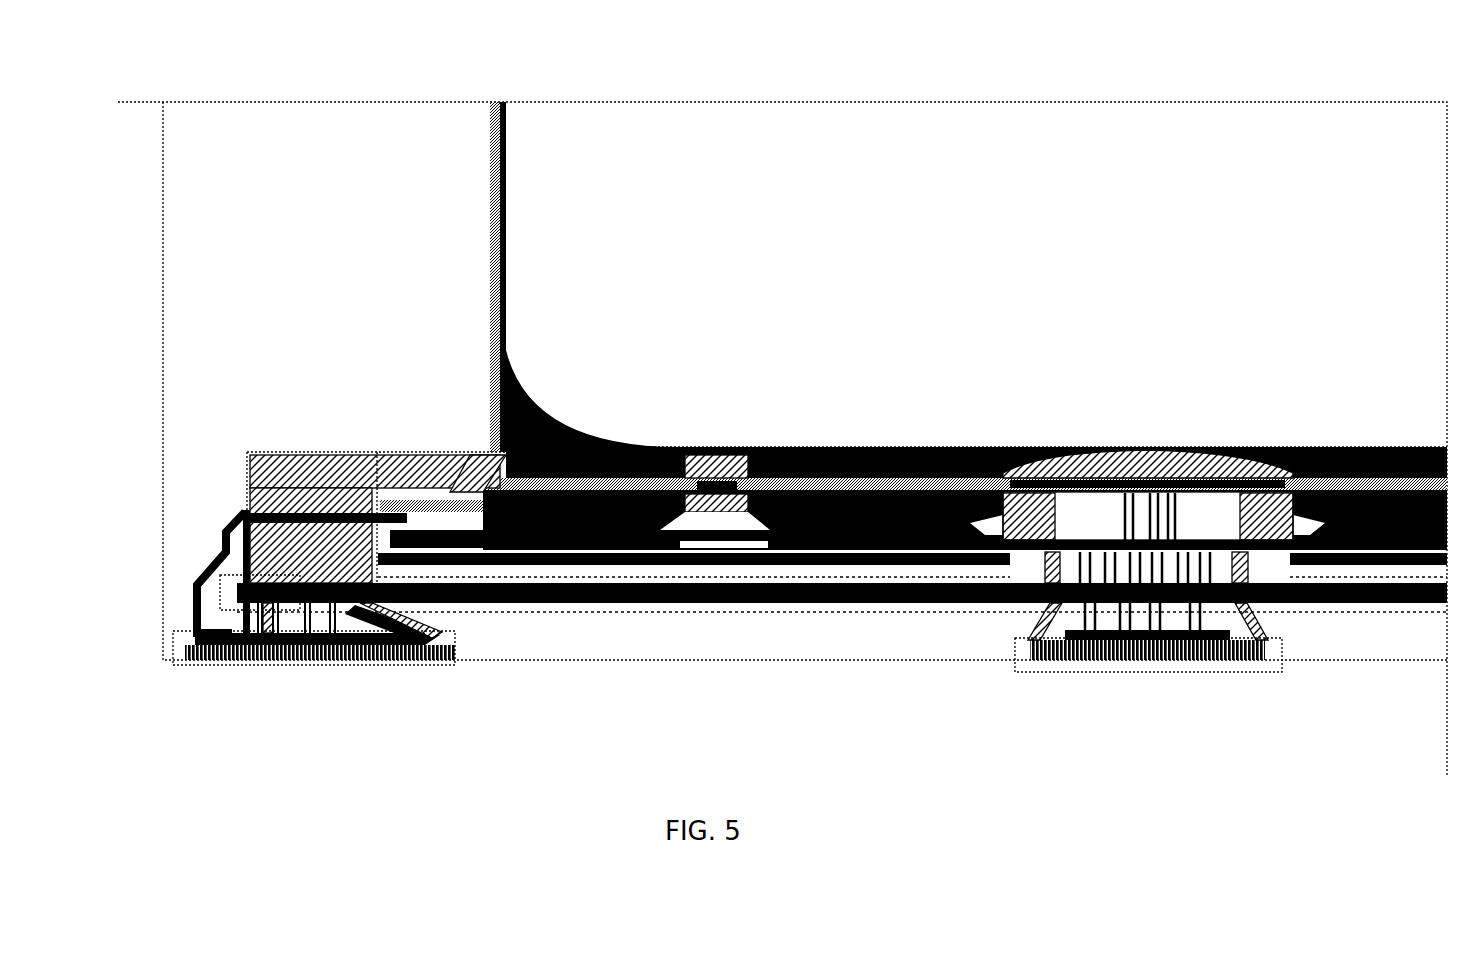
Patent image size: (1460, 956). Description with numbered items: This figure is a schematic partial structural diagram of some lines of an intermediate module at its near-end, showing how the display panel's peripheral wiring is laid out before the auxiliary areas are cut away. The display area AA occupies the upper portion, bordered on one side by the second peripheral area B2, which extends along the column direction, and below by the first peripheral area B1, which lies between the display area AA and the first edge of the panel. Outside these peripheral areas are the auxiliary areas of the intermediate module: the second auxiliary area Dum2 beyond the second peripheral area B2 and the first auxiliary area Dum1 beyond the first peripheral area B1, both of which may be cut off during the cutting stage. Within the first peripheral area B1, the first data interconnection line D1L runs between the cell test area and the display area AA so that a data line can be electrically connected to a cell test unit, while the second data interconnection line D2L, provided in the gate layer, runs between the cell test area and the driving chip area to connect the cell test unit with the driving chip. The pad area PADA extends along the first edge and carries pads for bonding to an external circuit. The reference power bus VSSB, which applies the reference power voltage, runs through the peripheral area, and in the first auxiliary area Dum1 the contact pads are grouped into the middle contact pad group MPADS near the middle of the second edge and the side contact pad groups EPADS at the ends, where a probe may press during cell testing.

The second peripheral area B2 is at (500, 102).
The display area AA is at (679, 132).
The second auxiliary area Dum2 is at (222, 262).
The reference power bus VSSB is at (335, 450).
The first peripheral area B1 is at (205, 508).
The first data interconnection line D1L is at (976, 462).
The second data interconnection line D2L is at (918, 520).
The pad area PADA is at (842, 597).
The side contact pad group EPADS is at (405, 660).
The first auxiliary area Dum1 is at (931, 634).
The middle contact pad group MPADS is at (1145, 662).